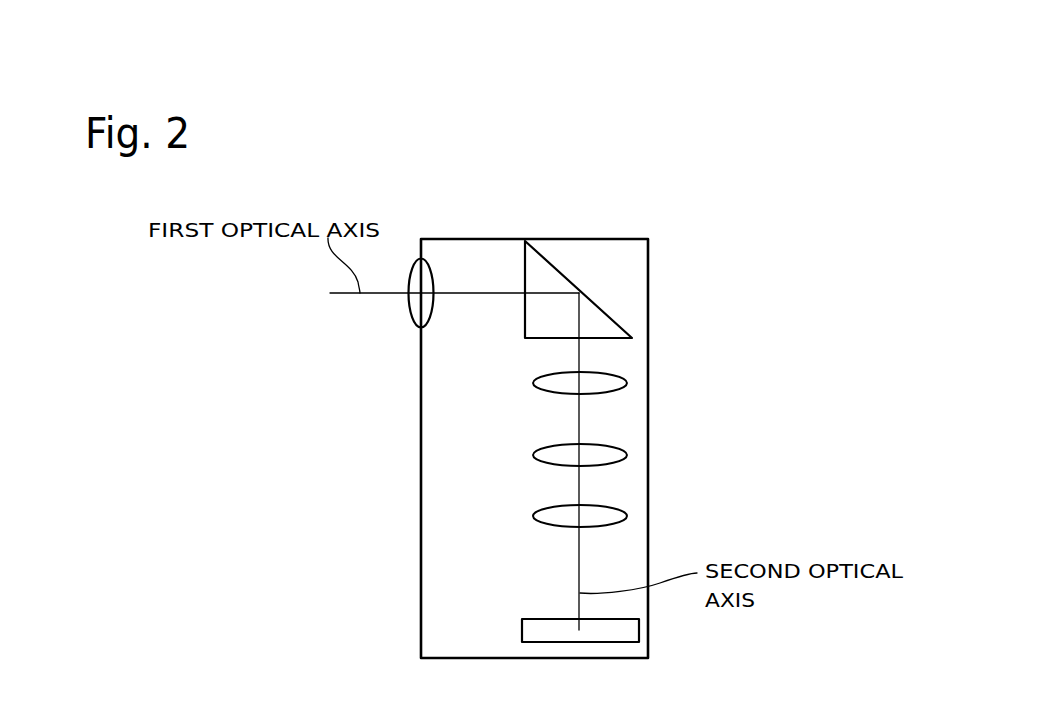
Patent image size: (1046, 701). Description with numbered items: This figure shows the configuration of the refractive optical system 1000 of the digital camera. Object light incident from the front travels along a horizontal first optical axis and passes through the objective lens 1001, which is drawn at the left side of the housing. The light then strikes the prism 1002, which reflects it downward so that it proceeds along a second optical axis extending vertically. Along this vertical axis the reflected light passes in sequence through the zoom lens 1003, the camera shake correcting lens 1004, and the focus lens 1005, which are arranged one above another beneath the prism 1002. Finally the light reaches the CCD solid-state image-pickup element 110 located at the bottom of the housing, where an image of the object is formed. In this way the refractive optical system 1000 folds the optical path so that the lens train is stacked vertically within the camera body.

The refractive optical system 1000 is at (611, 130).
The objective lens 1001 is at (419, 258).
The prism 1002 is at (602, 326).
The zoom lens 1003 is at (600, 386).
The camera shake correcting lens 1004 is at (607, 461).
The focus lens 1005 is at (627, 517).
The CCD solid-state image-pickup element 110 is at (625, 635).